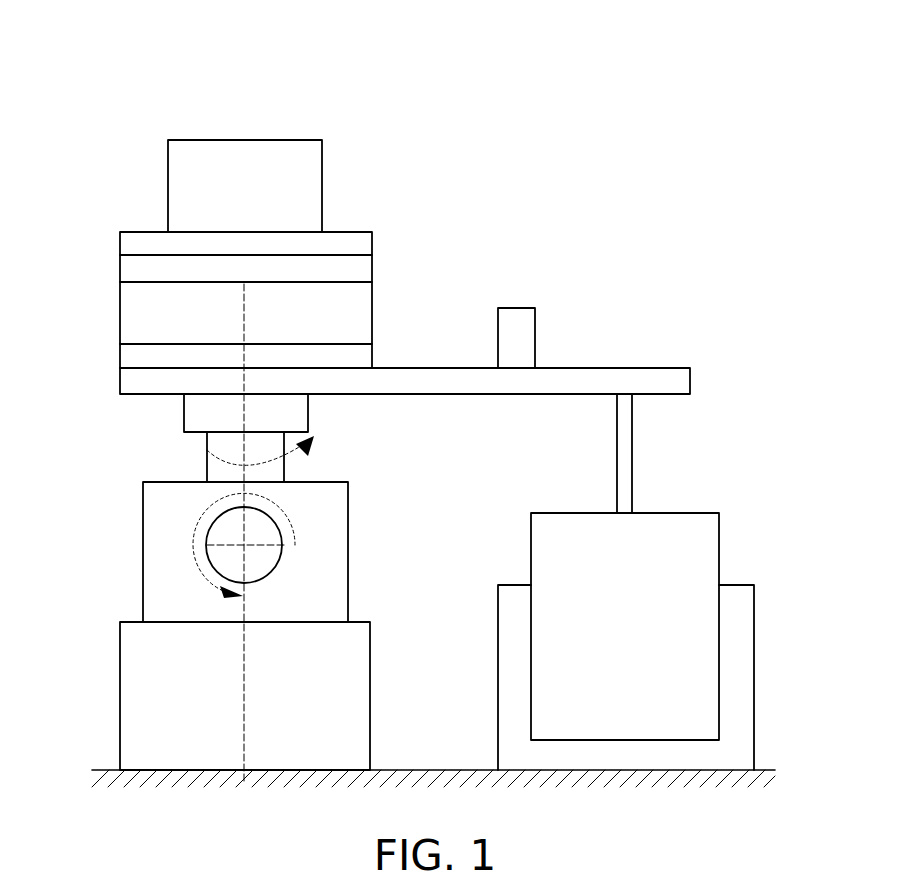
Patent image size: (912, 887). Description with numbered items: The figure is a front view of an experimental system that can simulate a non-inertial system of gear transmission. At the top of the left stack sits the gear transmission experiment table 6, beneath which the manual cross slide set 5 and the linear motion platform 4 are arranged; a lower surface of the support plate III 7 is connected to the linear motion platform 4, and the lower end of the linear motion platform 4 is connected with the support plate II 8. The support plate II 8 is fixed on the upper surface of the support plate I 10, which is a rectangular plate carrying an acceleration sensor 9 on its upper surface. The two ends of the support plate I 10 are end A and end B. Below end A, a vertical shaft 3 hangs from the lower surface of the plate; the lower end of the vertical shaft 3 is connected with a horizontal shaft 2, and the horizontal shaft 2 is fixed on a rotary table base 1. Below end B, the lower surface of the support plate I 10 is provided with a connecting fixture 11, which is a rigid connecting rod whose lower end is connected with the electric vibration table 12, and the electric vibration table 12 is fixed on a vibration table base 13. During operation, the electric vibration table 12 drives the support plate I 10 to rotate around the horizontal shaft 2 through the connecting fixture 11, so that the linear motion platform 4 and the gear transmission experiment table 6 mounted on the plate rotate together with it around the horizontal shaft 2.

The rotary table base 1 is at (135, 625).
The horizontal shaft 2 is at (208, 560).
The vertical shaft 3 is at (213, 463).
The linear motion platform 4 is at (135, 332).
The manual cross slide set 5 is at (137, 242).
The gear transmission experiment table 6 is at (168, 168).
The support plate III 7 is at (268, 272).
The support plate II 8 is at (365, 362).
The acceleration sensor 9 is at (520, 312).
The support plate I 10 is at (603, 390).
The connecting fixture 11 is at (627, 482).
The electric vibration table 12 is at (668, 530).
The vibration table base 13 is at (725, 585).